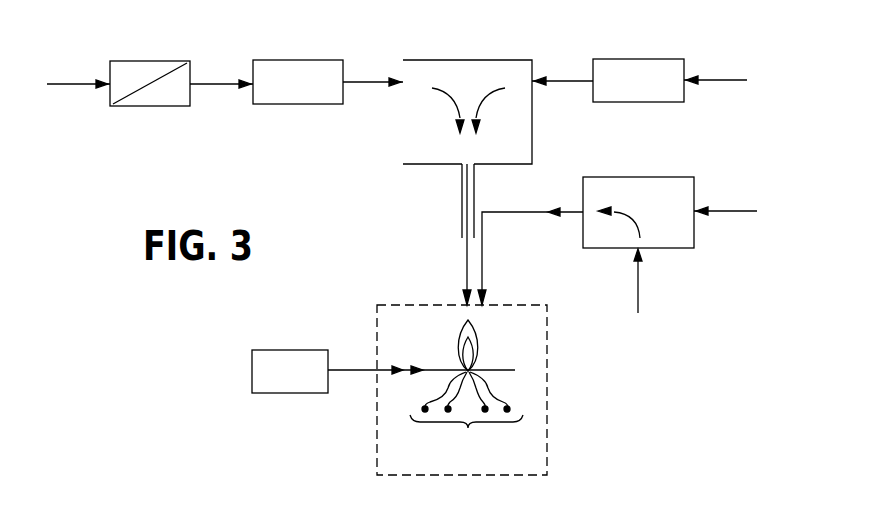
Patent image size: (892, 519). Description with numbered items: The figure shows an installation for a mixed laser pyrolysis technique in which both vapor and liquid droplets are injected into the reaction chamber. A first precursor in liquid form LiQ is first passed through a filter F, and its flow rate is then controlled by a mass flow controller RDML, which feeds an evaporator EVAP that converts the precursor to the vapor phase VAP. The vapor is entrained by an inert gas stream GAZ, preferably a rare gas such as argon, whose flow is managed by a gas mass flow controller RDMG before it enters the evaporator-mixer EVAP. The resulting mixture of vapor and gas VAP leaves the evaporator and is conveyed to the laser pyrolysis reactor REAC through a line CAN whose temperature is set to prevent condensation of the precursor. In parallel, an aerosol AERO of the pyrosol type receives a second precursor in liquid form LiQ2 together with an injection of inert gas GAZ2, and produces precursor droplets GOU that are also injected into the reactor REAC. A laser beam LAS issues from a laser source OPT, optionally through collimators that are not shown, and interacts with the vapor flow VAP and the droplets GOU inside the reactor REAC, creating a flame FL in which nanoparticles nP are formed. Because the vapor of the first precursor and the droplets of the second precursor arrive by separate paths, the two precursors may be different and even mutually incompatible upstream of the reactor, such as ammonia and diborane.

The filter F is at (152, 60).
The precursor in liquid form LiQ is at (72, 86).
The mass flow controller RDML is at (297, 58).
The evaporator EVAP is at (464, 58).
The gas mass flow controller RDMG is at (633, 57).
The gas stream GAZ is at (713, 82).
The aerosol AERO is at (632, 176).
The precursor in liquid form LiQ2 is at (727, 214).
The inert gas GAZ2 is at (641, 287).
The line CAN is at (458, 189).
The vapor phase VAP is at (465, 268).
The precursor droplets GOU is at (497, 214).
The laser source OPT is at (290, 348).
The laser beam LAS is at (365, 372).
The laser pyrolysis reactor REAC is at (556, 360).
The flame FL is at (478, 352).
The nanoparticles nP is at (466, 419).